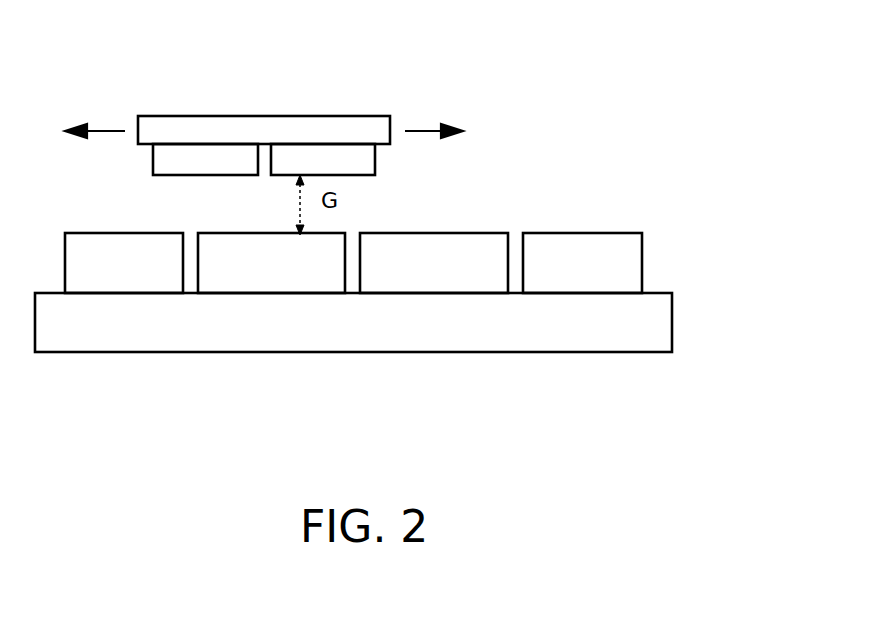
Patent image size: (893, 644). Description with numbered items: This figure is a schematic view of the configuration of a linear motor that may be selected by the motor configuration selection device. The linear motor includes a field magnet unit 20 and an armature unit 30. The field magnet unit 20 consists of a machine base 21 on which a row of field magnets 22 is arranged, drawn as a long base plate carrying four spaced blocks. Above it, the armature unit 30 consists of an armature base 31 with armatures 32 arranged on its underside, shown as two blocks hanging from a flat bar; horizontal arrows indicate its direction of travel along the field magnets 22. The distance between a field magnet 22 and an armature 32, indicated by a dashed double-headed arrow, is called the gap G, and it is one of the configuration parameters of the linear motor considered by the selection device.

The field magnet unit 20 is at (413, 318).
The machine base 21 is at (347, 342).
The field magnet 22 is at (202, 238).
The armature unit 30 is at (278, 102).
The armature base 31 is at (271, 124).
The armature 32 is at (160, 160).